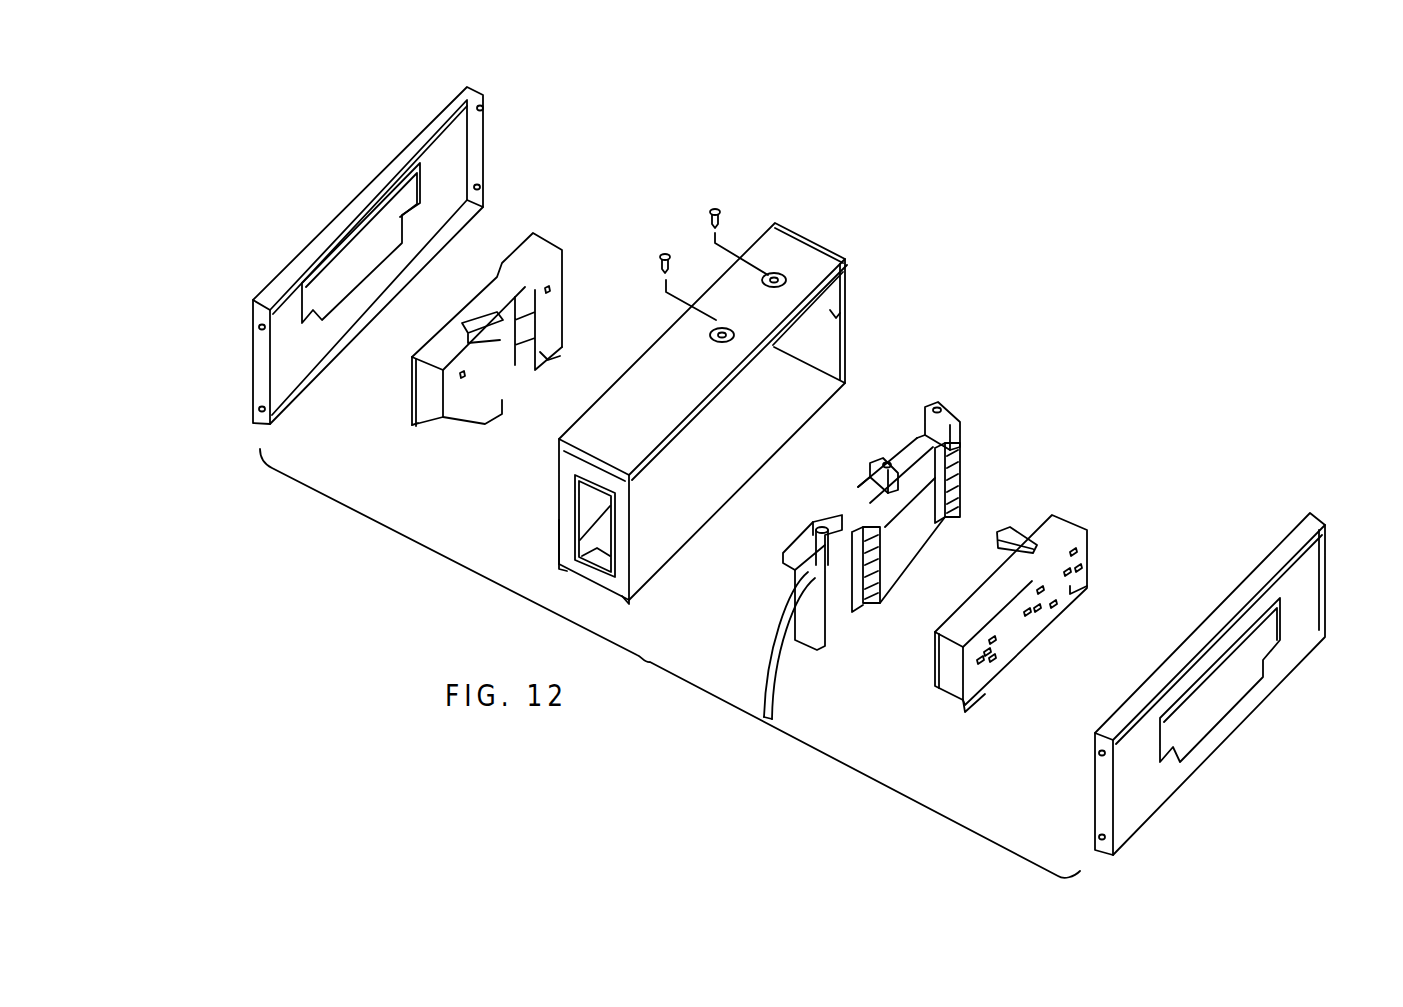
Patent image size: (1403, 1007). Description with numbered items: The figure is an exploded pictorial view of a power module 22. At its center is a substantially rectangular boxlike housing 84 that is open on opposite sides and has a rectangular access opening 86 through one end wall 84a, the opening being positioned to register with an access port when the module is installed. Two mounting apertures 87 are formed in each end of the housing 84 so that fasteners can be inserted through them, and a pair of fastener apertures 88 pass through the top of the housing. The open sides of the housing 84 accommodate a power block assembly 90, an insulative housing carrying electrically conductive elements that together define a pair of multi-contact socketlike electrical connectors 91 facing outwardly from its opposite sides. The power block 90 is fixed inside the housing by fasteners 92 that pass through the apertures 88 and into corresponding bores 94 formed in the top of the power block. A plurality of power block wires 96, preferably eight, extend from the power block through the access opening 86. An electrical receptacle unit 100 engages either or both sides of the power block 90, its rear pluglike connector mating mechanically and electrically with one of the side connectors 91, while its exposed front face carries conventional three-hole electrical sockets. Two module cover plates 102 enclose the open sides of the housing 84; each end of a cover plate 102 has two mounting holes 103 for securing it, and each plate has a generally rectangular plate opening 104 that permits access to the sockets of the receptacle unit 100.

The power module 22 is at (1008, 297).
The housing 84 is at (815, 265).
The end wall 84a is at (565, 543).
The access opening 86 is at (585, 470).
The mounting apertures 87 is at (834, 313).
The fastener apertures 88 is at (778, 273).
The power block assembly 90 is at (917, 514).
The electrical connectors 91 is at (963, 480).
The fasteners 92 is at (666, 253).
The bores 94 is at (938, 407).
The power block wires 96 is at (782, 688).
The electrical receptacle unit 100 is at (533, 247).
The module cover plates 102 is at (478, 99).
The mounting holes 103 is at (482, 108).
The plate opening 104 is at (352, 290).